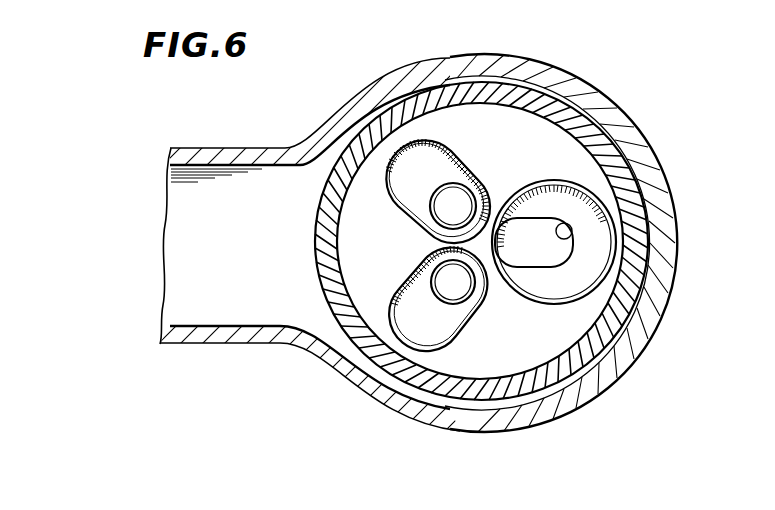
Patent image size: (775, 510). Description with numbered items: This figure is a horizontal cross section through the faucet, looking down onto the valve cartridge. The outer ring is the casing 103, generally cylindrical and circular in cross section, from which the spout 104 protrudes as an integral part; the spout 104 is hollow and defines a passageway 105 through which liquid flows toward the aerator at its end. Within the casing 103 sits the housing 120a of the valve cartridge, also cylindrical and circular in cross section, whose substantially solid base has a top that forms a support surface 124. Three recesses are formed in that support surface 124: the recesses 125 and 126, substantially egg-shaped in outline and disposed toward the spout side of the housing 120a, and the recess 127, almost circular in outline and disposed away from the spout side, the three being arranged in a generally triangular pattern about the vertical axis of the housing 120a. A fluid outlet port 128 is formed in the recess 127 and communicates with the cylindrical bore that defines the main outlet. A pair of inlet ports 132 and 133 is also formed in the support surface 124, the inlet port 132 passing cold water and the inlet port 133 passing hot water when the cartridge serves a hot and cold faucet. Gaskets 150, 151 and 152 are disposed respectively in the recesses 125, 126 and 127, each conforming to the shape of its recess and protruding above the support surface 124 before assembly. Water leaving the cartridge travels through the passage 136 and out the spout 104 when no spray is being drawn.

The casing 103 is at (650, 166).
The spout 104 is at (262, 156).
The passageway 105 is at (198, 235).
The housing 120a is at (616, 132).
The support surface 124 is at (590, 305).
The recess 125 is at (447, 162).
The recess 126 is at (433, 332).
The recess 127 is at (597, 250).
The fluid outlet port 128 is at (569, 227).
The inlet port 132 is at (439, 188).
The inlet port 133 is at (468, 290).
The passage 136 is at (650, 270).
The gasket 150 is at (480, 176).
The gasket 151 is at (396, 297).
The gasket 152 is at (568, 302).